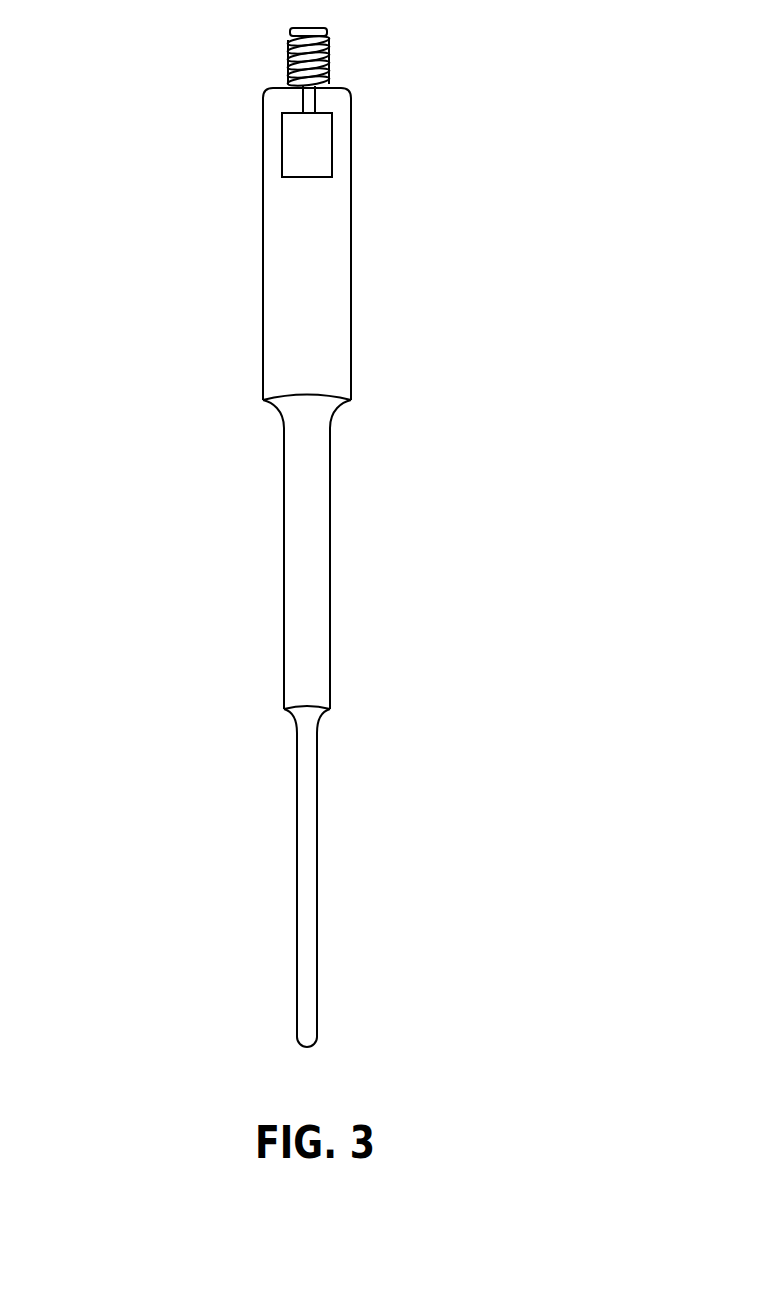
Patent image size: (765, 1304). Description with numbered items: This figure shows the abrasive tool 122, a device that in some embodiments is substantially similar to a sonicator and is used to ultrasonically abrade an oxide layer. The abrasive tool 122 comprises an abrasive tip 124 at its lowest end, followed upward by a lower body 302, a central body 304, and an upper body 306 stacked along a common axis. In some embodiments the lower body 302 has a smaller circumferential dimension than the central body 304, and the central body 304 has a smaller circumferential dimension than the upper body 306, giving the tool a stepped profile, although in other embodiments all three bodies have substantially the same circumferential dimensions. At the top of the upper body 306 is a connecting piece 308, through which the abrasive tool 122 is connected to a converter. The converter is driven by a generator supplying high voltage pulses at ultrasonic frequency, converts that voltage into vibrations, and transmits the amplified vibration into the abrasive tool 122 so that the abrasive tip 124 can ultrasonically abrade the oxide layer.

The abrasive tool 122 is at (126, 440).
The abrasive tip 124 is at (309, 1046).
The lower body 302 is at (315, 883).
The central body 304 is at (318, 582).
The upper body 306 is at (352, 264).
The connecting piece 308 is at (331, 43).